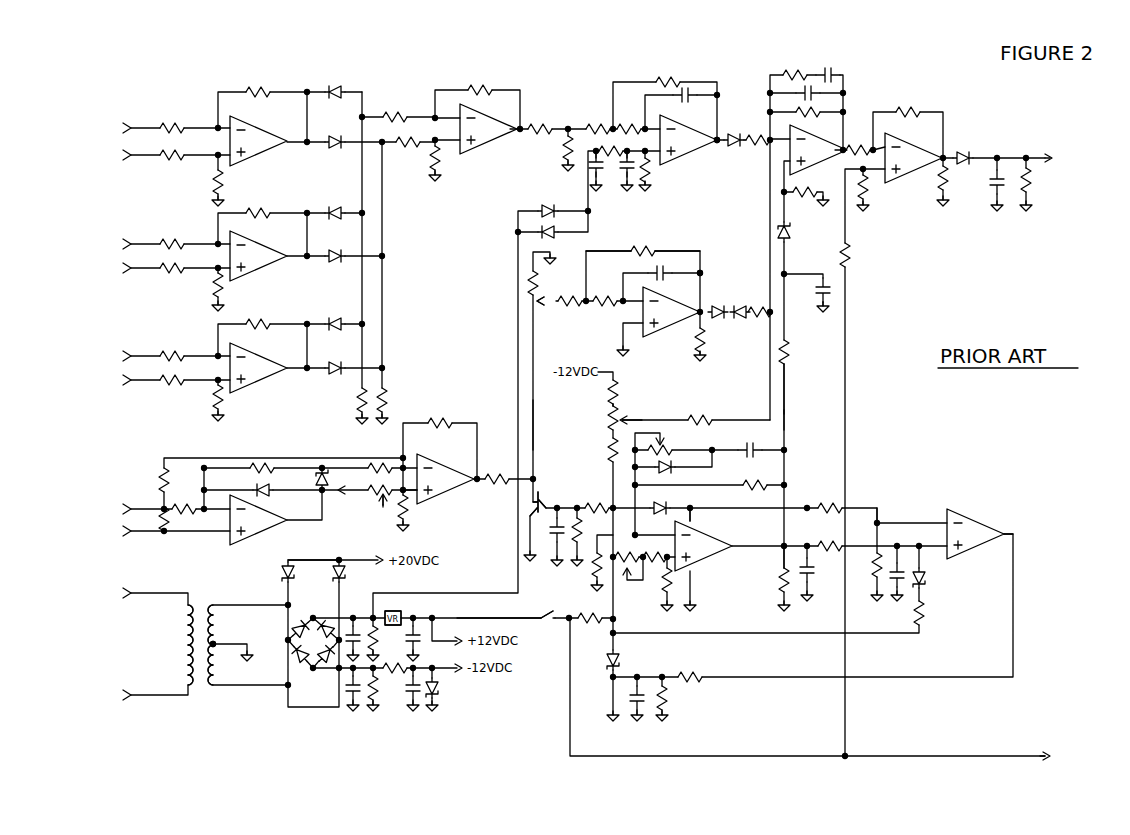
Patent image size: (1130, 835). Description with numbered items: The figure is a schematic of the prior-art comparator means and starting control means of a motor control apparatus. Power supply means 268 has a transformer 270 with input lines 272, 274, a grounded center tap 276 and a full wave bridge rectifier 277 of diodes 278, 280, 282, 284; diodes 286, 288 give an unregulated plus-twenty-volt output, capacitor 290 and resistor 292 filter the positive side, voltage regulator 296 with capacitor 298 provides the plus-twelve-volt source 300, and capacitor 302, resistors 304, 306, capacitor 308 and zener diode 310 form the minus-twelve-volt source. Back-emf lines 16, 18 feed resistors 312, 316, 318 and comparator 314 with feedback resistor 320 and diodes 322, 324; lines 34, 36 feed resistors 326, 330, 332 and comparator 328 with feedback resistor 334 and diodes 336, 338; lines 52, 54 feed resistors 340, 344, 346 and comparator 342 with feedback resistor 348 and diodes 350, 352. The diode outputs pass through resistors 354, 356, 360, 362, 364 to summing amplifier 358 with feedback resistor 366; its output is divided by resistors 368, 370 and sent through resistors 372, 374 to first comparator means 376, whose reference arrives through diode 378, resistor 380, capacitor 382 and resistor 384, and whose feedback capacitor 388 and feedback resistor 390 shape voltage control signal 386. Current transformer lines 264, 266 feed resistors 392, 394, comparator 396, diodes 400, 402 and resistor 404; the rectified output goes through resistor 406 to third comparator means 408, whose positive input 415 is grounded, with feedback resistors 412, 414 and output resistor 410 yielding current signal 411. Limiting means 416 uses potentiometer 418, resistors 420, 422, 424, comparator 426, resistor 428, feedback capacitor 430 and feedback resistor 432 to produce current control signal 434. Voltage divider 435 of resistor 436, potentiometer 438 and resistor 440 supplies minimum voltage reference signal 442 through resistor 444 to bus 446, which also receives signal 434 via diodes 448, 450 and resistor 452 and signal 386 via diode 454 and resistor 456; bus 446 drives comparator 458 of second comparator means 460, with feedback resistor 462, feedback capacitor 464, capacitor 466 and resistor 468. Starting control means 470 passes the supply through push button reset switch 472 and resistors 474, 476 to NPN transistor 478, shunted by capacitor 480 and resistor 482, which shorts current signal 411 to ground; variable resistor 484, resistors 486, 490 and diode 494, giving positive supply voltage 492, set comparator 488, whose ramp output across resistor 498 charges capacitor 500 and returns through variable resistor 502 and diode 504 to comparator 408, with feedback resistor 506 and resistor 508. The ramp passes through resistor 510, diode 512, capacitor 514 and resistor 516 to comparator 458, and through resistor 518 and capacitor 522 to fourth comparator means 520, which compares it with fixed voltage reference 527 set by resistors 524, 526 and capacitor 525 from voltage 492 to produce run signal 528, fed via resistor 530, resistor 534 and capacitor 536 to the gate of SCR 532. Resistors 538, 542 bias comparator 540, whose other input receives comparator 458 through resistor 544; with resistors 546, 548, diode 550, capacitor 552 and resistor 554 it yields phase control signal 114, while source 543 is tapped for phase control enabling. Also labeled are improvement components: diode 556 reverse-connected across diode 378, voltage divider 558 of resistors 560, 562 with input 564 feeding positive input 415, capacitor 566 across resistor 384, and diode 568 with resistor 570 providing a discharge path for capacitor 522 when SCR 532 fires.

The line 16 is at (118, 129).
The line 18 is at (118, 156).
The line 34 is at (118, 245).
The line 36 is at (118, 269).
The line 52 is at (118, 357).
The line 54 is at (118, 381).
The phase control signal 114 is at (1063, 159).
The line 264 is at (116, 510).
The line 266 is at (116, 532).
The power supply means 268 is at (340, 553).
The transformer 270 is at (200, 603).
The input line 272 is at (116, 594).
The input line 274 is at (116, 696).
The center tap 276 is at (216, 645).
The full wave bridge rectifier 277 is at (296, 657).
The diode 278 is at (296, 624).
The diode 280 is at (322, 630).
The diode 282 is at (296, 666).
The diode 284 is at (328, 662).
The diode 286 is at (280, 572).
The diode 288 is at (347, 572).
The capacitor 290 is at (361, 618).
The resistor 292 is at (369, 644).
The voltage regulator 296 is at (390, 610).
The capacitor 298 is at (416, 614).
The +12 VDC source 300 is at (495, 616).
The capacitor 302 is at (349, 692).
The resistor 304 is at (380, 686).
The resistor 306 is at (395, 662).
The capacitor 308 is at (410, 690).
The zener diode 310 is at (439, 686).
The resistor 312 is at (180, 123).
The comparator 314 is at (242, 133).
The resistor 316 is at (180, 150).
The resistor 318 is at (213, 181).
The feedback resistor 320 is at (252, 95).
The diode 322 is at (329, 136).
The diode 324 is at (329, 97).
The resistor 326 is at (180, 239).
The comparator 328 is at (242, 248).
The resistor 330 is at (163, 272).
The resistor 332 is at (213, 284).
The feedback resistor 334 is at (267, 207).
The diode 336 is at (340, 250).
The diode 338 is at (340, 207).
The resistor 340 is at (180, 351).
The comparator 342 is at (242, 360).
The resistor 344 is at (163, 384).
The resistor 346 is at (213, 398).
The feedback resistor 348 is at (267, 318).
The diode 350 is at (331, 362).
The diode 352 is at (332, 317).
The resistor 354 is at (356, 396).
The resistor 356 is at (393, 111).
The summing amplifier 358 is at (472, 121).
The resistor 360 is at (386, 397).
The resistor 362 is at (397, 136).
The resistor 364 is at (430, 158).
The feedback resistor 366 is at (487, 84).
The resistor 368 is at (546, 123).
The resistor 370 is at (562, 150).
The resistor 372 is at (591, 123).
The resistor 374 is at (629, 121).
The first comparator means 376 is at (672, 132).
The diode 378 is at (536, 204).
The resistor 380 is at (612, 146).
The capacitor 382 is at (617, 170).
The resistor 384 is at (647, 176).
The voltage control signal 386 is at (714, 144).
The feedback capacitor 388 is at (686, 96).
The feedback resistor 390 is at (659, 77).
The resistor 392 is at (170, 520).
The resistor 394 is at (185, 503).
The comparator 396 is at (257, 530).
The diode 400 is at (272, 497).
The diode 402 is at (318, 480).
The resistor 404 is at (258, 474).
The resistor 406 is at (374, 474).
The third comparator means 408 is at (429, 471).
The resistor 410 is at (497, 473).
The current signal 411 is at (533, 416).
The feedback resistor 412 is at (448, 416).
The resistor 414 is at (160, 482).
The positive input 415 is at (409, 494).
The limiting means 416 is at (679, 253).
The potentiometer 418 is at (538, 304).
The resistor 420 is at (546, 281).
The resistor 422 is at (566, 306).
The resistor 424 is at (602, 306).
The comparator 426 is at (655, 304).
The resistor 428 is at (703, 341).
The feedback capacitor 430 is at (669, 268).
The feedback resistor 432 is at (636, 245).
The current control signal 434 is at (703, 278).
The voltage divider 435 is at (639, 391).
The resistor 436 is at (607, 392).
The potentiometer 438 is at (606, 418).
The resistor 440 is at (606, 452).
The minimum voltage reference signal 442 is at (663, 417).
The resistor 444 is at (698, 413).
The bus 446 is at (780, 374).
The diode 448 is at (712, 307).
The diode 450 is at (745, 320).
The resistor 452 is at (764, 308).
The diode 454 is at (733, 134).
The resistor 456 is at (757, 146).
The comparator 458 is at (802, 142).
The second comparator means 460 is at (885, 238).
The feedback resistor 462 is at (800, 107).
The feedback capacitor 464 is at (797, 89).
The capacitor 466 is at (823, 69).
The resistor 468 is at (788, 68).
The starting control means 470 is at (866, 488).
The push button reset switch 472 is at (547, 625).
The resistor 474 is at (588, 624).
The resistor 476 is at (601, 498).
The NPN transistor 478 is at (540, 502).
The capacitor 480 is at (554, 547).
The resistor 482 is at (578, 526).
The variable resistor 484 is at (630, 551).
The resistor 486 is at (655, 579).
The comparator 488 is at (699, 556).
The resistor 490 is at (664, 590).
The positive supply voltage 492 is at (693, 524).
The diode 494 is at (666, 522).
The resistor 498 is at (782, 576).
The capacitor 500 is at (752, 444).
The variable resistor 502 is at (664, 444).
The diode 504 is at (666, 472).
The feedback resistor 506 is at (755, 479).
The resistor 508 is at (595, 570).
The resistor 510 is at (786, 347).
The diode 512 is at (790, 232).
The capacitor 514 is at (813, 289).
The resistor 516 is at (812, 186).
The resistor 518 is at (830, 538).
The fourth comparator means 520 is at (972, 545).
The capacitor 522 is at (900, 552).
The resistor 524 is at (830, 500).
The capacitor 525 is at (810, 565).
The resistor 526 is at (875, 570).
The fixed voltage reference 527 is at (877, 517).
The run signal 528 is at (1014, 522).
The resistor 530 is at (696, 682).
The SCR 532 is at (639, 646).
The resistor 534 is at (668, 698).
The capacitor 536 is at (634, 708).
The resistor 538 is at (848, 256).
The comparator 540 is at (897, 150).
The resistor 542 is at (867, 188).
The +12 VDC source 543 is at (1031, 757).
The resistor 544 is at (855, 141).
The resistor 546 is at (940, 178).
The feedback resistor 548 is at (918, 106).
The diode 550 is at (968, 152).
The capacitor 552 is at (995, 180).
The resistor 554 is at (1028, 180).
The diode 556 is at (560, 228).
The voltage divider 558 is at (382, 508).
The resistor 560 is at (388, 483).
The resistor 562 is at (406, 512).
The input 564 is at (367, 500).
The capacitor 566 is at (605, 165).
The diode 568 is at (926, 578).
The resistor 570 is at (926, 613).